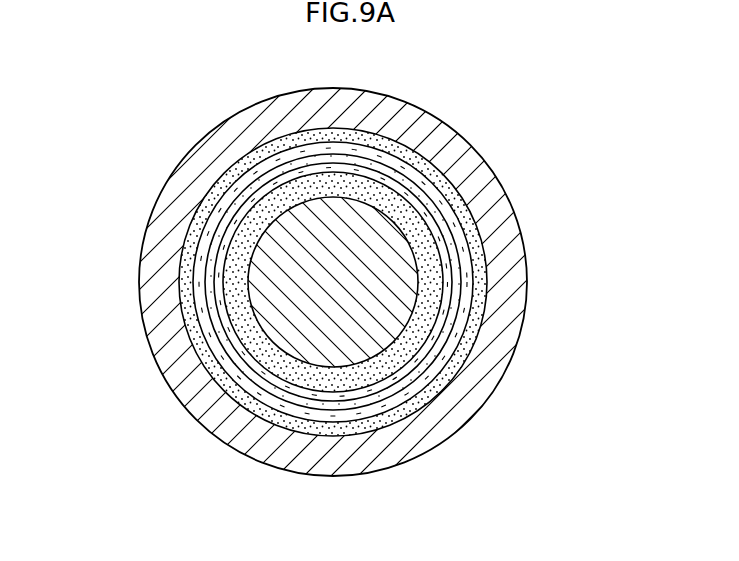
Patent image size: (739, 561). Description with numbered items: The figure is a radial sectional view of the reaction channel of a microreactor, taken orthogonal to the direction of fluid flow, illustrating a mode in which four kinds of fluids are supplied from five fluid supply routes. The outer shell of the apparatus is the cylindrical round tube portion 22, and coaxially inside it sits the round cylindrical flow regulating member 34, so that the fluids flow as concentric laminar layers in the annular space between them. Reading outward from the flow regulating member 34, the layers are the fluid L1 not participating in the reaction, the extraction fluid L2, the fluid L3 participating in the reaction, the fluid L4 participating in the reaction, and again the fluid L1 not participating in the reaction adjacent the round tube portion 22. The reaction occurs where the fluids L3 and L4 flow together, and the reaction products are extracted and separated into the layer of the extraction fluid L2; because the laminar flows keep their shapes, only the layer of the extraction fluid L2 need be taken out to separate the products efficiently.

The round tube portion 22 is at (248, 450).
The flow regulating member 34 is at (285, 301).
The fluid not participating in the reaction L1 is at (422, 150).
The extraction fluid L2 is at (433, 350).
The fluid participating in the reaction L3 is at (315, 157).
The fluid participating in the reaction L4 is at (262, 160).